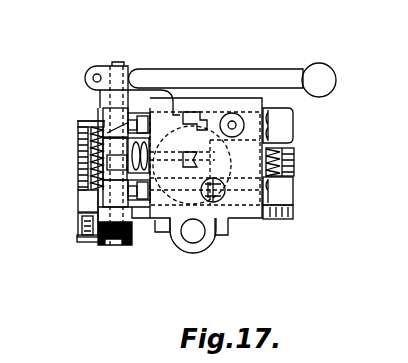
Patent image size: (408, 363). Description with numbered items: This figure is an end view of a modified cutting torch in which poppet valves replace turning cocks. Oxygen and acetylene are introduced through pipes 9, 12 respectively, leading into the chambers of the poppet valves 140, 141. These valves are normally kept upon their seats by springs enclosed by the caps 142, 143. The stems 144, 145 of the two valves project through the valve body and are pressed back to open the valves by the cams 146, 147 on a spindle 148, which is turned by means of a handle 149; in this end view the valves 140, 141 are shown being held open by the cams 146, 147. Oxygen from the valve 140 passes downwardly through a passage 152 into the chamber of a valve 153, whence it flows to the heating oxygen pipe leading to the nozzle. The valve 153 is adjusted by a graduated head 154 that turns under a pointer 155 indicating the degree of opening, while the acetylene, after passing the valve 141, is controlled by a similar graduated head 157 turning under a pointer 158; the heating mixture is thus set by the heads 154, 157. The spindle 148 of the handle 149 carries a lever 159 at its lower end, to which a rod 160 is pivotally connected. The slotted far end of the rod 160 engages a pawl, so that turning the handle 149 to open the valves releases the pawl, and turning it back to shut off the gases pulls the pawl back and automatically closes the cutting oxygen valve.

The oxygen pipe 9 is at (232, 114).
The acetylene pipe 12 is at (228, 216).
The oxygen poppet valve 140 is at (203, 112).
The acetylene poppet valve 141 is at (205, 172).
The cap 142 is at (288, 130).
The cap 143 is at (284, 199).
The valve stem 144 is at (139, 113).
The valve stem 145 is at (134, 230).
The cam 146 is at (100, 140).
The cam 147 is at (124, 194).
The spindle 148 is at (97, 172).
The handle 149 is at (280, 78).
The passage 152 is at (190, 118).
The valve 153 is at (153, 172).
The graduated head 154 is at (82, 127).
The pointer 155 is at (100, 124).
The graduated head 157 is at (294, 172).
The pointer 158 is at (296, 152).
The lever 159 is at (88, 236).
The rod 160 is at (90, 205).